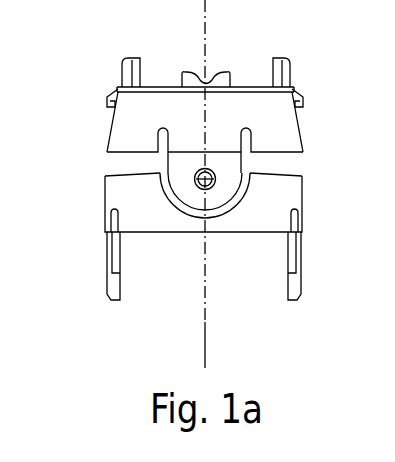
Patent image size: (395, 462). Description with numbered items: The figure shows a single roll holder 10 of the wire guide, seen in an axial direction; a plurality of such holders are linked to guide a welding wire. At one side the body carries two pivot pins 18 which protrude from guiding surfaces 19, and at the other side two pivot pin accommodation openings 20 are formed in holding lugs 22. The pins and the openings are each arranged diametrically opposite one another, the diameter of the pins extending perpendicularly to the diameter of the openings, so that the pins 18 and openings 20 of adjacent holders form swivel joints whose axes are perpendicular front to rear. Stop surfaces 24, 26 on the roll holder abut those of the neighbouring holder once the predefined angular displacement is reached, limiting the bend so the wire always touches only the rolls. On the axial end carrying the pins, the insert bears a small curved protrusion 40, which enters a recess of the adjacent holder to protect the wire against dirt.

The roll holder 10 is at (297, 143).
The pivot pin 18 is at (106, 98).
The guiding surface 19 is at (122, 68).
The pivot pin accommodation opening 20 is at (94, 250).
The holding lug 22 is at (110, 275).
The stop surface 24 is at (108, 153).
The stop surface 26 is at (106, 176).
The protrusion 40 is at (233, 78).